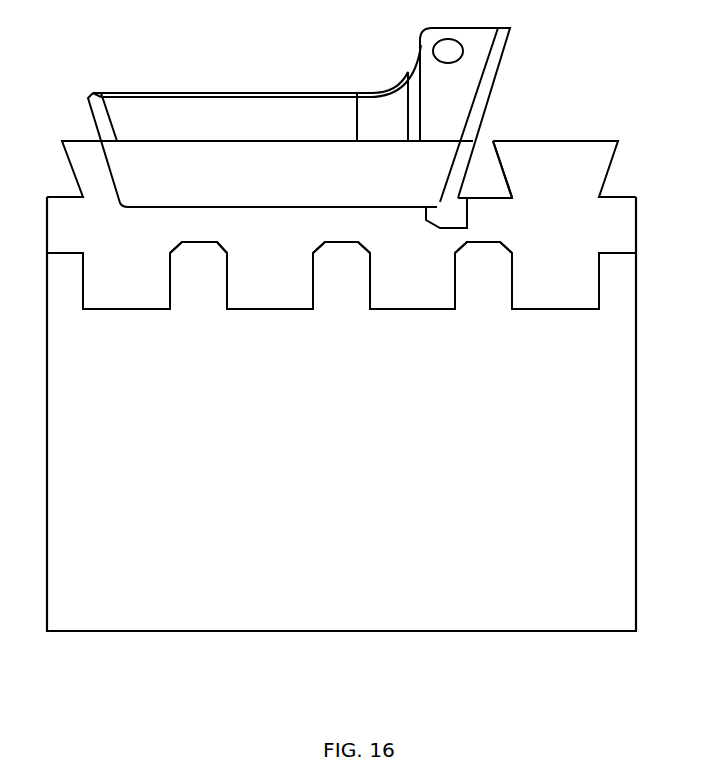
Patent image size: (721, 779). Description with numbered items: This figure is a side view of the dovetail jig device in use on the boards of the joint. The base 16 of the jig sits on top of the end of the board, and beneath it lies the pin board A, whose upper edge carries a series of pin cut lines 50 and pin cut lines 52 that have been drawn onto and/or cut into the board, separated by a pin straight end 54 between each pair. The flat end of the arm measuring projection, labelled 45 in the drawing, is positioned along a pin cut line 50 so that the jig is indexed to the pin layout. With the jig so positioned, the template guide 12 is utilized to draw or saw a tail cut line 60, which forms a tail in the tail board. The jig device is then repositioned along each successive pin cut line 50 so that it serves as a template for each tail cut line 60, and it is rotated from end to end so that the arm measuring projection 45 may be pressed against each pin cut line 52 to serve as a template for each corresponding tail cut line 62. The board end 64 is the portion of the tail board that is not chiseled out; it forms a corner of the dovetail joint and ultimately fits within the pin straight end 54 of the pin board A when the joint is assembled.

The template guide 12 is at (509, 42).
The base 16 is at (262, 126).
The tail cut line 60 is at (614, 173).
The tail cut line 62 is at (509, 174).
The board end 64 is at (565, 139).
The pin cut line 50 is at (173, 281).
The pin cut line 52 is at (80, 264).
The pin straight end 54 is at (126, 313).
The latch 45 is at (452, 277).
The pin board A is at (341, 414).